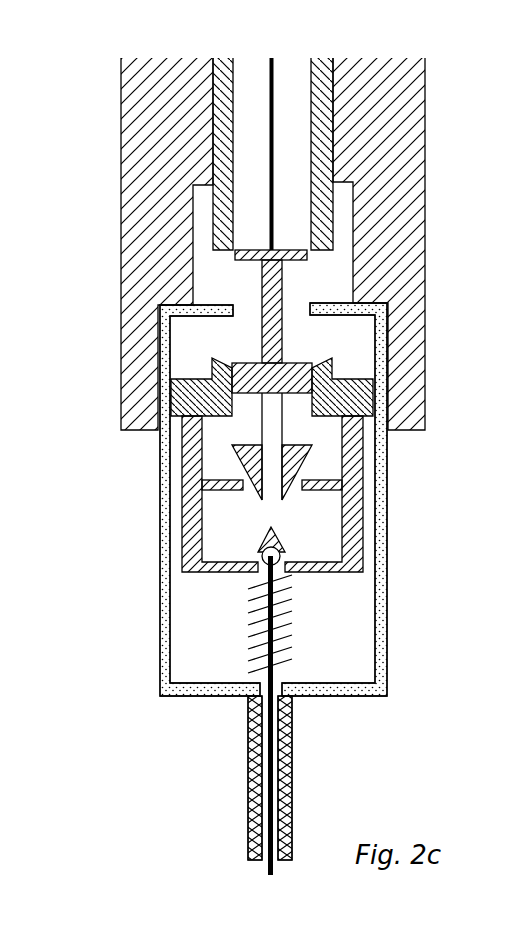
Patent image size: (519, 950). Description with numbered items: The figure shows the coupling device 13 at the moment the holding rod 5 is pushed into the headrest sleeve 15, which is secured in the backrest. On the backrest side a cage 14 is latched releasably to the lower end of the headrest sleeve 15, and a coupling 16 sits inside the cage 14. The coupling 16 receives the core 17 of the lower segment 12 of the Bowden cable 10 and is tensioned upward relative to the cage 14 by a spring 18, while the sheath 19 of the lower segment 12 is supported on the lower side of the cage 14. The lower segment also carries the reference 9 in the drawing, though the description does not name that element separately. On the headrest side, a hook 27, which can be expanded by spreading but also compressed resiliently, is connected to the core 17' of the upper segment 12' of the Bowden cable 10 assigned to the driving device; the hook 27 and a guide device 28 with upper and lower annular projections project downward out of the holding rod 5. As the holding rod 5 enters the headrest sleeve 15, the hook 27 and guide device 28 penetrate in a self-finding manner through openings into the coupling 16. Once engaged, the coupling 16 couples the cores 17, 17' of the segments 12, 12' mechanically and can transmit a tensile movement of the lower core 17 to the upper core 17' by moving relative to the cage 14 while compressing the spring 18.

The holding rod 5 is at (222, 138).
The headrest sleeve 15 is at (172, 173).
The upper segment of the Bowden cable 12' is at (375, 154).
The core of the upper segment 17' is at (385, 154).
The guide device 28 is at (250, 335).
The hook 27 is at (240, 497).
The coupling 16 is at (363, 537).
The spring 18 is at (286, 610).
The core of the lower segment 17 is at (343, 715).
The coupling device 13 is at (136, 519).
The cage 14 is at (166, 636).
The sheath 19 is at (286, 778).
The catheter 9 is at (234, 772).
The Bowden cable 10 is at (210, 778).
The lower segment of the Bowden cable 12 is at (210, 778).